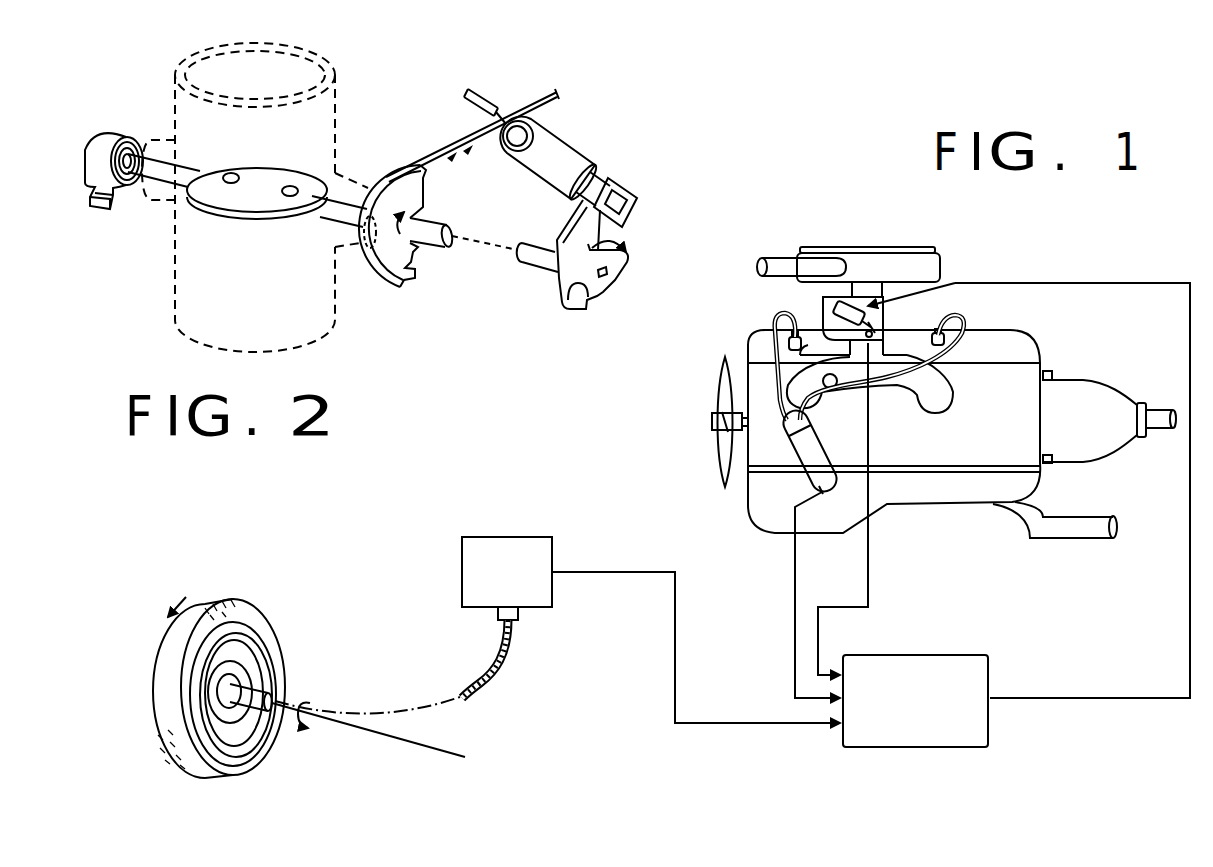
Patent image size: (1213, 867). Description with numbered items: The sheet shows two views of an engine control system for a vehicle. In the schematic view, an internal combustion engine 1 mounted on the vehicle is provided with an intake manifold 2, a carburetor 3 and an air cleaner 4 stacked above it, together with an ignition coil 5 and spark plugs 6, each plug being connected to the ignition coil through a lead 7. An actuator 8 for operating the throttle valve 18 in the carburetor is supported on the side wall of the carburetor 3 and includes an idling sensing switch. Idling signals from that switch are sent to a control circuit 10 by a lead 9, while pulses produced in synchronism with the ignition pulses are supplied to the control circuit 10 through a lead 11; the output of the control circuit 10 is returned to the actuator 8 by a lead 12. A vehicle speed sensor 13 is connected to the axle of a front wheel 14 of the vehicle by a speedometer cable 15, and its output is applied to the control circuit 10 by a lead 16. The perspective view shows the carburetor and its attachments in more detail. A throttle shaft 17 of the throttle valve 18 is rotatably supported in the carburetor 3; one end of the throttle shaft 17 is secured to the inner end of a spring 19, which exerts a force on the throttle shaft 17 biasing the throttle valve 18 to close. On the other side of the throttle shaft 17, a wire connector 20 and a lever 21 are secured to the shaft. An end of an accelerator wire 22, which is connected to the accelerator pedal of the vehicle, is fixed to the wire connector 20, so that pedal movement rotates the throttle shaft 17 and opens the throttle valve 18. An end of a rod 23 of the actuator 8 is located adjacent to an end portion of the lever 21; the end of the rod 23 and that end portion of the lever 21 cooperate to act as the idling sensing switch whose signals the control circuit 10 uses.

In FIG. 1, the internal combustion engine 1 is at (1025, 380).
In FIG. 1, the intake manifold 2 is at (945, 390).
In FIG. 2, the carburetor 3 is at (178, 110).
In FIG. 1, the carburetor 3 is at (878, 310).
In FIG. 1, the air cleaner 4 is at (912, 263).
In FIG. 1, the ignition coil 5 is at (816, 457).
In FIG. 1, the spark plugs 6 is at (802, 344).
In FIG. 1, the lead 7 is at (778, 384).
In FIG. 2, the actuator 8 is at (572, 158).
In FIG. 1, the actuator 8 is at (832, 309).
In FIG. 1, the lead 9 is at (868, 583).
In FIG. 1, the control circuit 10 is at (968, 648).
In FIG. 1, the lead 11 is at (795, 618).
In FIG. 1, the lead 12 is at (1190, 640).
In FIG. 1, the vehicle speed sensor 13 is at (520, 536).
In FIG. 1, the front wheel 14 is at (237, 757).
In FIG. 1, the speedometer cable 15 is at (502, 666).
In FIG. 1, the lead 16 is at (675, 697).
In FIG. 2, the throttle shaft 17 is at (335, 213).
In FIG. 2, the throttle valve 18 is at (255, 176).
In FIG. 2, the spring 19 is at (88, 178).
In FIG. 2, the wire connector 20 is at (410, 260).
In FIG. 2, the lever 21 is at (568, 262).
In FIG. 2, the accelerator wire 22 is at (439, 151).
In FIG. 2, the rod 23 is at (628, 216).